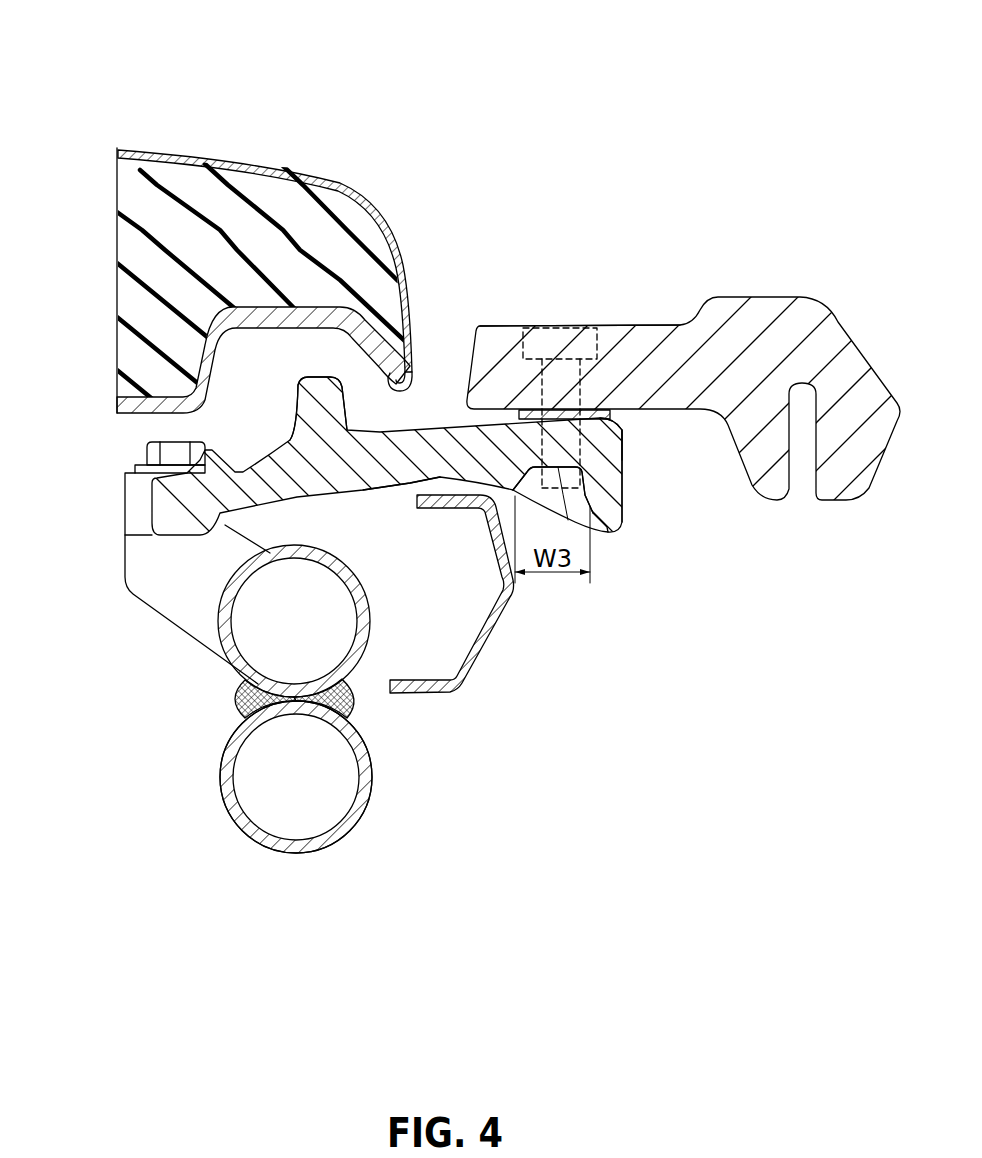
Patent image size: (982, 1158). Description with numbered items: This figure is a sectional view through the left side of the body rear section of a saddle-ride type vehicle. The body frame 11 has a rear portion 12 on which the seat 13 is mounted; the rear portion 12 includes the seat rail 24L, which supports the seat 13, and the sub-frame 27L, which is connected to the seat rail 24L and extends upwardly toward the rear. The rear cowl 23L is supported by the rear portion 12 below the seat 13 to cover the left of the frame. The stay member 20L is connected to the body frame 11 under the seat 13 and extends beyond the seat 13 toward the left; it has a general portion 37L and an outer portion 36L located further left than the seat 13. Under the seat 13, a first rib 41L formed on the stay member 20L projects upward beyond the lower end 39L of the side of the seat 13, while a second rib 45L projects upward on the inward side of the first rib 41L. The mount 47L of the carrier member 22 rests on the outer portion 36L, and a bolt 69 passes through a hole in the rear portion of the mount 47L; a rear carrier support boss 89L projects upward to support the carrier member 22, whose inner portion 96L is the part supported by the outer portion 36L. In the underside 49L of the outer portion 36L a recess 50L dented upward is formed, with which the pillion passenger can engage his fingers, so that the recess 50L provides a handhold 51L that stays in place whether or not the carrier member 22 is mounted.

The body frame 11 is at (262, 860).
The rear portion 12 is at (237, 828).
The seat 13 is at (207, 157).
The stay member 20L is at (622, 482).
The carrier member 22 is at (780, 295).
The rear cowl 23L is at (487, 657).
The seat rail 24L is at (213, 628).
The sub-frame 27L is at (223, 789).
The outer portion 36L is at (542, 423).
The general portion 37L is at (398, 470).
The lower end 39L is at (413, 390).
The first rib 41L is at (313, 375).
The second rib 45L is at (202, 447).
The mount 47L is at (613, 326).
The underside 49L is at (620, 522).
The recess 50L is at (562, 518).
The handhold 51L is at (568, 520).
The bolt 69 is at (558, 328).
The rear carrier support boss 89L is at (593, 410).
The inner portion 96L is at (623, 443).